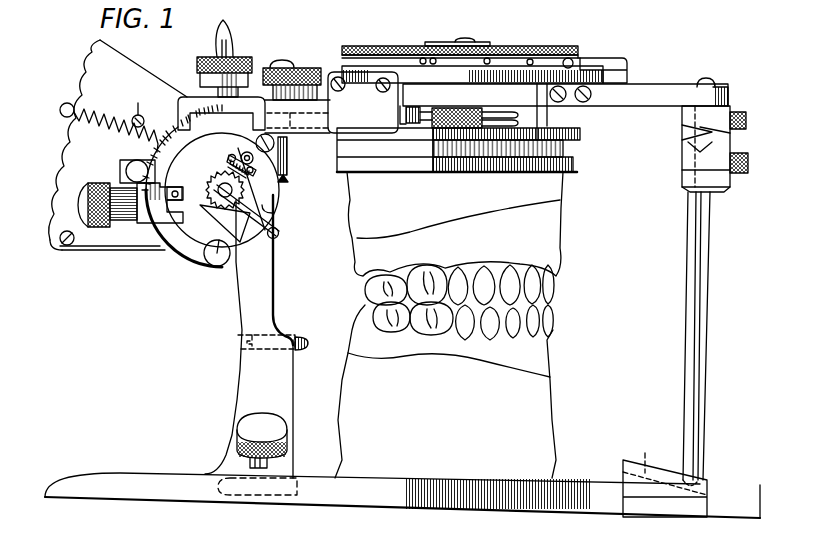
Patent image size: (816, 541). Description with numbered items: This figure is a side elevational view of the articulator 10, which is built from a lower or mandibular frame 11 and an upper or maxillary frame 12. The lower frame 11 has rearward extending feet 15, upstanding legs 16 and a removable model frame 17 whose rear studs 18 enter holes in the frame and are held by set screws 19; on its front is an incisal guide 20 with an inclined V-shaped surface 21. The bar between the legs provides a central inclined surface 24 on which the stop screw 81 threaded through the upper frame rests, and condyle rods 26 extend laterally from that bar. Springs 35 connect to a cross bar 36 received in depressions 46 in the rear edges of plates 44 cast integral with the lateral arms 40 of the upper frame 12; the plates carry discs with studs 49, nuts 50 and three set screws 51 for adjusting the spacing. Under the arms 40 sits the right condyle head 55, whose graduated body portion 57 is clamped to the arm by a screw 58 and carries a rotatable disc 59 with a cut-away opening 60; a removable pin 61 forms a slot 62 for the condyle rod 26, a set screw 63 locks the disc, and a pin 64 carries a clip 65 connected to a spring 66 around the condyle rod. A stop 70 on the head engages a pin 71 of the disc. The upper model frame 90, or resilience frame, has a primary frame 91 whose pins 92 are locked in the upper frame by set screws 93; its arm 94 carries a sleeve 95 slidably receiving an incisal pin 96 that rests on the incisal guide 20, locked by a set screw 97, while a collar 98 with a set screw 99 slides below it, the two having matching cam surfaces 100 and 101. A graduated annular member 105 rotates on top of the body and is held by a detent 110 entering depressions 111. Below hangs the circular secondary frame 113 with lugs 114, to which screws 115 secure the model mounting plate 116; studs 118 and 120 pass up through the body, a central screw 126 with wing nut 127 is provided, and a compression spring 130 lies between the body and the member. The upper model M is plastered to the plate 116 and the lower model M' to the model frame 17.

The articulator 10 is at (222, 333).
The lower frame 11 is at (239, 389).
The upper frame 12 is at (192, 93).
The feet 15 is at (141, 485).
The legs 16 is at (262, 298).
The model frame 17 is at (500, 497).
The studs 18 is at (283, 497).
The set screws 19 is at (266, 423).
The incisal guide 20 is at (662, 498).
The inclined V-shaped surface 21 is at (649, 468).
The inclined surface 24 is at (312, 164).
The condyle rods 26 is at (244, 187).
The springs 35 is at (100, 118).
The cross bar 36 is at (60, 111).
The lateral arms 40 is at (183, 108).
The plates 44 is at (110, 252).
The depressions 46 is at (56, 207).
The studs 49 is at (128, 171).
The nuts 50 is at (124, 158).
The set screws 51 is at (140, 105).
The right condyle head 55 is at (174, 258).
The body portion 57 is at (192, 262).
The screw 58 is at (232, 44).
The disc 59 is at (278, 196).
The opening 60 is at (232, 250).
The pin 61 is at (279, 233).
The slot 62 is at (273, 210).
The set screw 63 is at (217, 260).
The pin 64 is at (252, 166).
The clip 65 is at (253, 142).
The spring 66 is at (232, 163).
The stop 70 is at (147, 221).
The pin 71 is at (186, 188).
The stop screw 81 is at (300, 144).
The upper model frame 90 is at (562, 42).
The primary frame 91 is at (363, 112).
The pins 92 is at (322, 120).
The set screws 93 is at (295, 70).
The arm 94 is at (650, 104).
The sleeve 95 is at (690, 128).
The incisal pin 96 is at (702, 294).
The set screw 97 is at (748, 118).
The collar 98 is at (688, 173).
The set screw 99 is at (749, 163).
The cam surface 100 is at (714, 132).
The cam surface 101 is at (689, 145).
The annular member 105 is at (373, 50).
The detent 110 is at (614, 64).
The depressions 111 is at (503, 54).
The secondary frame 113 is at (580, 135).
The lugs 114 is at (440, 141).
The screws 115 is at (456, 110).
The model mounting plate 116 is at (574, 165).
The stud 118 is at (549, 118).
The stud 120 is at (424, 99).
The screw 126 is at (462, 39).
The wing nut 127 is at (435, 42).
The compression spring 130 is at (500, 112).
The upper model M is at (470, 238).
The lower model M' is at (465, 390).